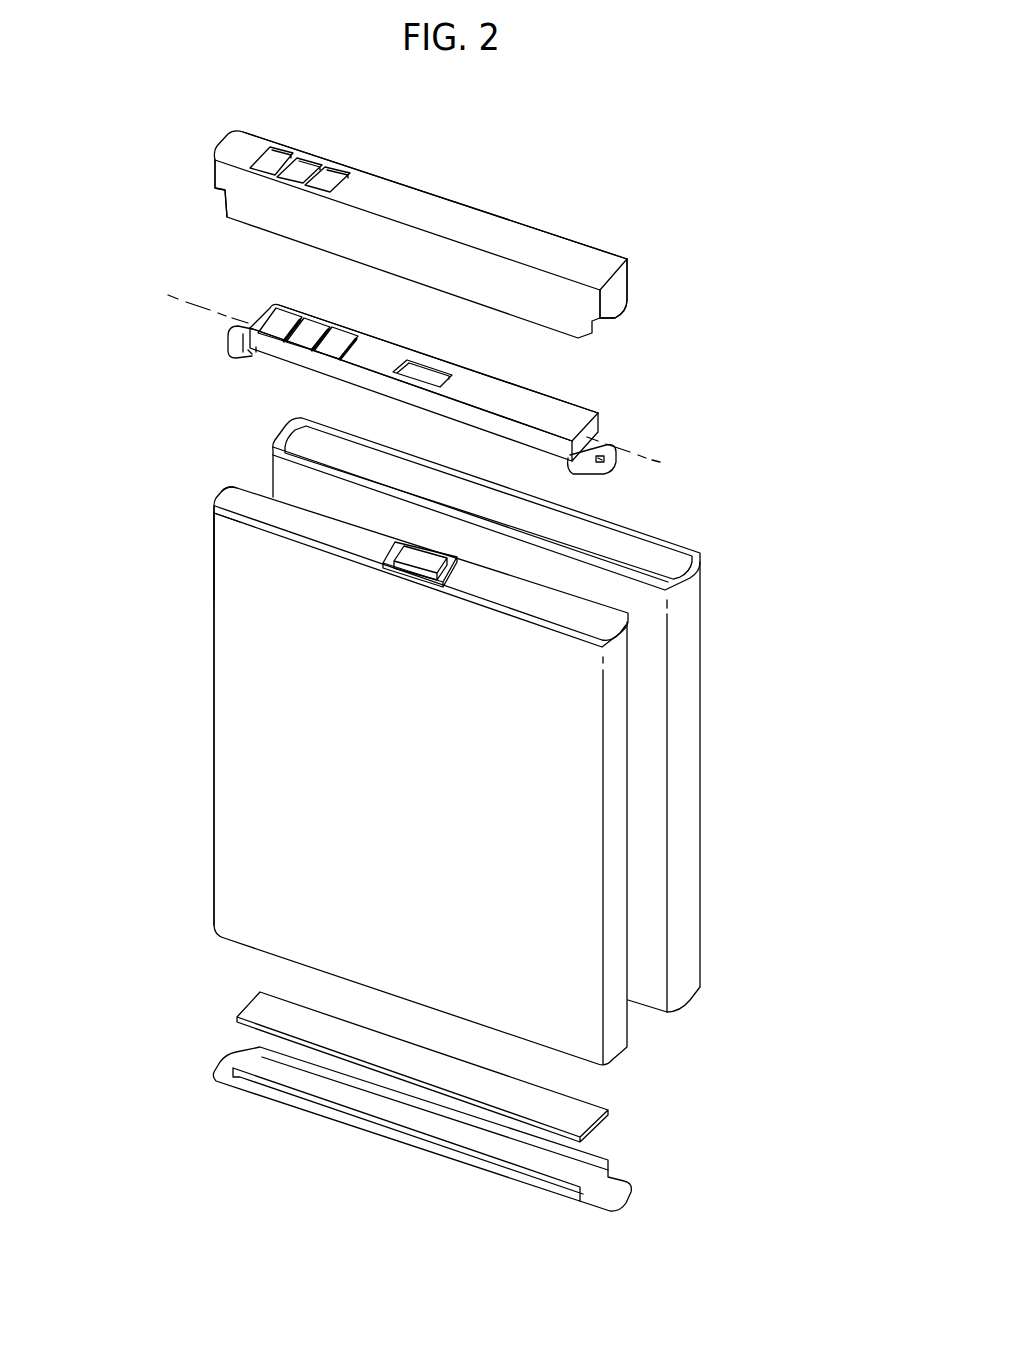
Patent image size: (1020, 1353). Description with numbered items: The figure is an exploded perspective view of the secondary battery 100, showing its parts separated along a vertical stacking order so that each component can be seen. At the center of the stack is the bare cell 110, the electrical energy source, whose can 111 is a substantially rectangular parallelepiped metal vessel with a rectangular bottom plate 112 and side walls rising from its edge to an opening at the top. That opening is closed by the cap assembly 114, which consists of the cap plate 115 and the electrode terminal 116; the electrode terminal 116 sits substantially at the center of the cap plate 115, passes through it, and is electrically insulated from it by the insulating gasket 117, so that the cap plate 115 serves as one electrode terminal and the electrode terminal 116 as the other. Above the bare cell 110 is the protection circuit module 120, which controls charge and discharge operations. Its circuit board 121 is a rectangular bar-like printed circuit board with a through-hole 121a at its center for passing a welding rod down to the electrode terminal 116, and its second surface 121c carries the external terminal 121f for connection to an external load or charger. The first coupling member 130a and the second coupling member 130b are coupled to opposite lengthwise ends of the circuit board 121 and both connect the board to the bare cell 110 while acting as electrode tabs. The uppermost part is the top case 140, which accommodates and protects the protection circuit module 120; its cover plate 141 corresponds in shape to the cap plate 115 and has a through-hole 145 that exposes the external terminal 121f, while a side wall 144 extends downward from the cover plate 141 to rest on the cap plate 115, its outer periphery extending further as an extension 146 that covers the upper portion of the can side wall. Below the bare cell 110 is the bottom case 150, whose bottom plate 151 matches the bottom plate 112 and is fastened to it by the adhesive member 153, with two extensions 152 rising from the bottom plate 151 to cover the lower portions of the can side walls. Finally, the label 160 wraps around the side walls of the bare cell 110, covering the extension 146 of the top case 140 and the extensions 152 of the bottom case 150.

The secondary battery 100 is at (700, 117).
The bare cell 110 is at (206, 767).
The can 111 is at (216, 680).
The bottom plate 112 is at (227, 595).
The cap assembly 114 is at (225, 486).
The cap plate 115 is at (223, 503).
The electrode terminal 116 is at (428, 563).
The insulating gasket 117 is at (392, 566).
The protection circuit module 120 is at (609, 417).
The circuit board 121 is at (553, 397).
The through-hole 121a is at (428, 372).
The second surface 121c is at (495, 388).
The external terminal 121f is at (324, 330).
The first coupling member 130a is at (620, 472).
The second coupling member 130b is at (217, 334).
The top case 140 is at (602, 236).
The cover plate 141 is at (485, 221).
The side wall 144 is at (622, 288).
The through-hole 145 is at (333, 170).
The extension 146 is at (237, 204).
The bottom case 150 is at (213, 1053).
The bottom plate 151 is at (612, 1193).
The extensions 152 is at (332, 1080).
The adhesive member 153 is at (590, 1117).
The label 160 is at (693, 692).